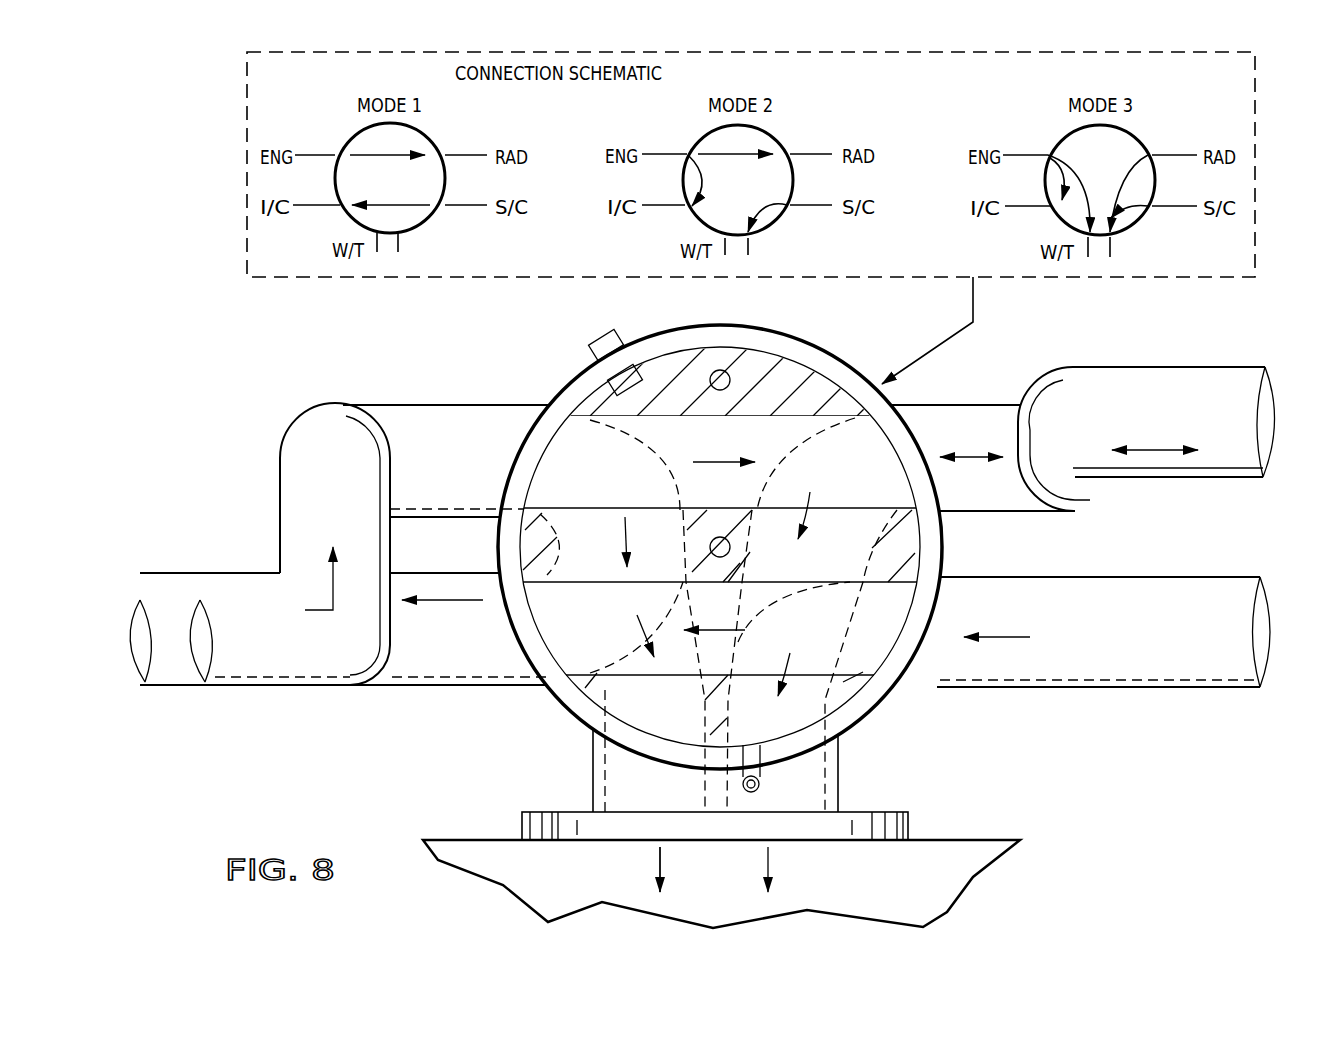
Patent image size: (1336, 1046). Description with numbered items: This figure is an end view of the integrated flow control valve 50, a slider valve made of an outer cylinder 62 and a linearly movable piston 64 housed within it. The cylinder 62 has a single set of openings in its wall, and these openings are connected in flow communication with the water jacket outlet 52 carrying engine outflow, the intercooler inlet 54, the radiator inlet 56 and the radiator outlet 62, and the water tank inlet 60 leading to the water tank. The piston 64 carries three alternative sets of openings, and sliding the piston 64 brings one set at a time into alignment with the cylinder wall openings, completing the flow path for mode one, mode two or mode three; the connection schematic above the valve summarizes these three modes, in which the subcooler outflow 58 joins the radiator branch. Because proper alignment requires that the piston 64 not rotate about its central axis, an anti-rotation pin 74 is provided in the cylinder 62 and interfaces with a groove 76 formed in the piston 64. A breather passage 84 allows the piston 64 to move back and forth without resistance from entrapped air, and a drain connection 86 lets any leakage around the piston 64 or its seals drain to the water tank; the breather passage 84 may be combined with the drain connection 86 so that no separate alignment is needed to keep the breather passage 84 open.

The flow control valve 50 is at (722, 559).
The water jacket outlet 52 is at (293, 517).
The intercooler inlet 54 is at (455, 688).
The radiator inlet 56 is at (1175, 479).
The subcooler outflow conduit 58 is at (1175, 689).
The water tank inlet 60 is at (725, 897).
The outer cylinder 62 is at (1103, 657).
The piston 64 is at (790, 373).
The anti-rotation pin 74 is at (603, 347).
The groove 76 is at (611, 379).
The breather passage 84 is at (718, 370).
The drain connection 86 is at (760, 785).